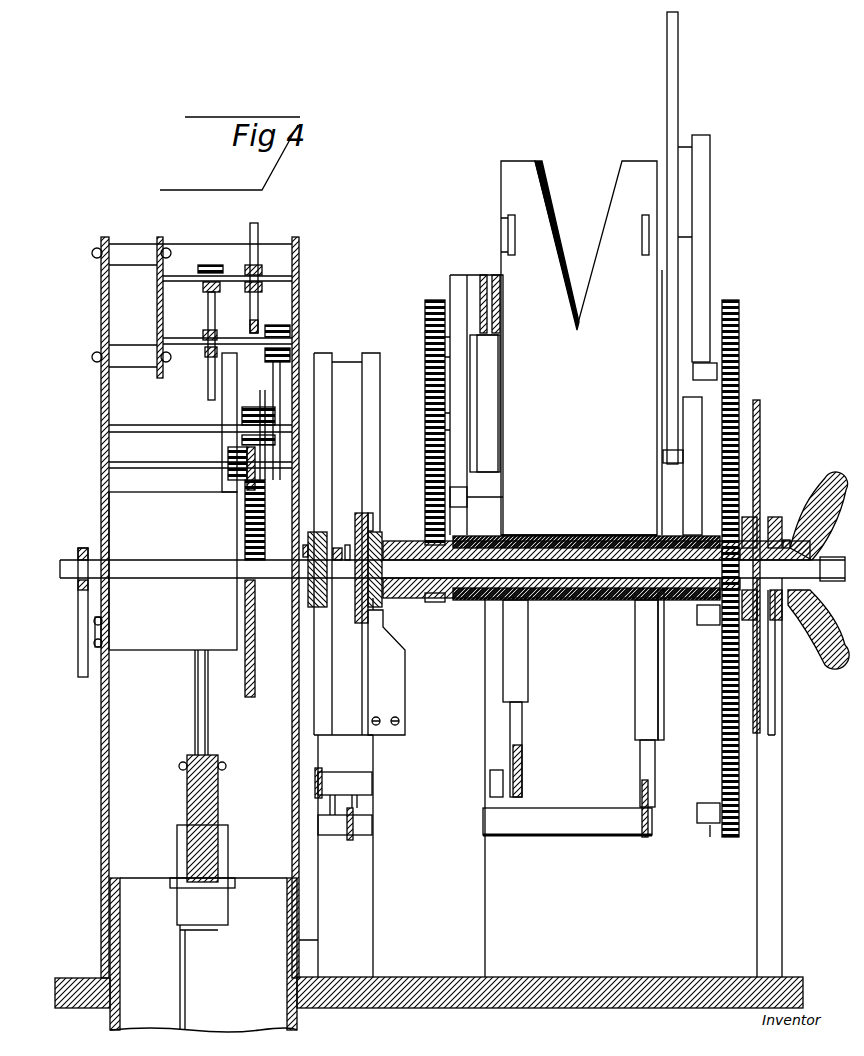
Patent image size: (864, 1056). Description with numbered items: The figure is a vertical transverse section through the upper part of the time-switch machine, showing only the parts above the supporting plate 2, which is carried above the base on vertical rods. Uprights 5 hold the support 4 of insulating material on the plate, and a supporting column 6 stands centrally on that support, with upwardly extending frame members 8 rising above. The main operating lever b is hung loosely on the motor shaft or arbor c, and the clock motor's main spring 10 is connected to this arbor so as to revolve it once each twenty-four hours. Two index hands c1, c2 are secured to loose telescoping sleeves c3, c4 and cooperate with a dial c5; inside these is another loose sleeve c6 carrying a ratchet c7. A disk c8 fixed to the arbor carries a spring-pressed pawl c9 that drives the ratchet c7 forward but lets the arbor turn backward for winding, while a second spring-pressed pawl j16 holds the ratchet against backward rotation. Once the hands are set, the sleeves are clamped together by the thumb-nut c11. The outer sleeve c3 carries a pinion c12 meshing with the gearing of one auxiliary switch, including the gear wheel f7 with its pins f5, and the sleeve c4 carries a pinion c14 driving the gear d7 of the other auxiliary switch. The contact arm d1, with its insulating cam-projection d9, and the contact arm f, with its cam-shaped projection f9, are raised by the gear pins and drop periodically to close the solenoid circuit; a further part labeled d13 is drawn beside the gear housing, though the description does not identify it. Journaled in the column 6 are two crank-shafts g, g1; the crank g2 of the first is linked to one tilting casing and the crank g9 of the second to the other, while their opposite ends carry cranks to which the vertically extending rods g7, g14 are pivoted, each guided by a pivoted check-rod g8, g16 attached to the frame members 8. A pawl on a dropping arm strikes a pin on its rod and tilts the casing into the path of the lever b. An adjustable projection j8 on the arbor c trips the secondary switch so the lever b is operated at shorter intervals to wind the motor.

The supporting plate 2 is at (633, 972).
The support of insulating material 4 is at (607, 540).
The uprights 5 is at (765, 815).
The supporting column 6 is at (429, 787).
The upwardly extending frame members 8 is at (579, 348).
The main spring 10 is at (125, 513).
The main operating lever b is at (318, 690).
The motor shaft or arbor c is at (562, 568).
The index hand c1 is at (778, 688).
The index hand c2 is at (775, 672).
The outer telescoping sleeve c3 is at (682, 600).
The telescoping sleeve c4 is at (705, 606).
The dial c5 is at (760, 452).
The inner sleeve c6 is at (610, 600).
The ratchet c7 is at (383, 543).
The disk c8 is at (360, 530).
The spring-pressed pawl c9 is at (370, 515).
The thumb-nut c11 is at (822, 495).
The pinion c12 is at (722, 540).
The pinion c14 is at (437, 600).
The contact arm d1 is at (475, 278).
The gear d7 is at (430, 352).
The cam-projection d9 is at (460, 378).
The bracket d13 is at (460, 497).
The contact arm f is at (678, 78).
The pins f5 is at (710, 835).
The gear wheel f7 is at (742, 357).
The cam-shaped projection f9 is at (700, 237).
The crank-shaft g is at (505, 790).
The crank-shaft g1 is at (610, 828).
The crank g2 is at (320, 776).
The vertically extending rod g7 is at (520, 668).
The pivoted check-rod g8 is at (513, 232).
The crank g9 is at (345, 818).
The vertically-extending rod g14 is at (652, 710).
The pivoted check-rod g16 is at (645, 232).
The projection j8 is at (82, 650).
The spring-pressed pawl j16 is at (395, 718).